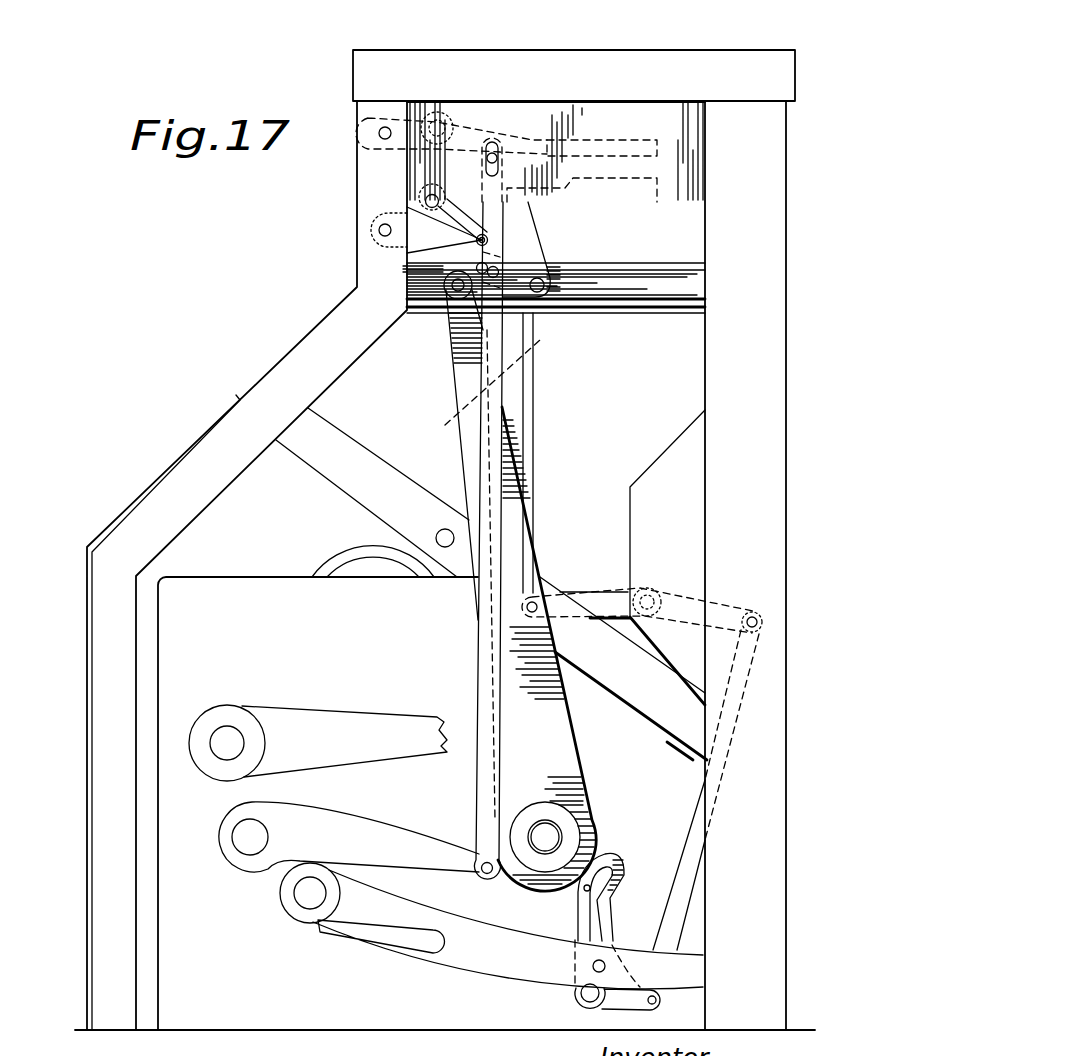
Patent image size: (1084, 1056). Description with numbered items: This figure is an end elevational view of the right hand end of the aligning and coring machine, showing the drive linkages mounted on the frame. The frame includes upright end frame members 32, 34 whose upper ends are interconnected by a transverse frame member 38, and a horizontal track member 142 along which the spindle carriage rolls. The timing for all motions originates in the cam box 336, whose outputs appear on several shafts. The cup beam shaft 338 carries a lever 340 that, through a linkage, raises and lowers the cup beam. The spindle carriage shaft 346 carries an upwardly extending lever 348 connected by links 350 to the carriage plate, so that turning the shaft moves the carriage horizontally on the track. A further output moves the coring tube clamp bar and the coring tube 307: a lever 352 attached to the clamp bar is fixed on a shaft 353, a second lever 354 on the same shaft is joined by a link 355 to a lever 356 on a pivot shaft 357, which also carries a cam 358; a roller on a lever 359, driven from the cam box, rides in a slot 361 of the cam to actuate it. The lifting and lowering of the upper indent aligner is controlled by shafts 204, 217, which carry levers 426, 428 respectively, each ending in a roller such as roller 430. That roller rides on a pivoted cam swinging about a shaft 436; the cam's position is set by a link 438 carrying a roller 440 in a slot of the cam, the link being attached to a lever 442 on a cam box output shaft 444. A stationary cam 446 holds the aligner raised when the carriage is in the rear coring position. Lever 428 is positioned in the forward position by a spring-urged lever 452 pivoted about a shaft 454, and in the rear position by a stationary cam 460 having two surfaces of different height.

The end frame member 32 is at (762, 515).
The end frame member 34 is at (106, 832).
The transverse frame member 38 is at (687, 77).
The track member 142 is at (690, 267).
The shaft 204 is at (482, 240).
The shaft 217 is at (440, 116).
The tube 307 is at (531, 408).
The cam box 336 is at (303, 623).
The cup beam shaft 338 is at (229, 742).
The lever 340 is at (311, 727).
The spindle carriage shaft 346 is at (550, 838).
The lever 348 is at (510, 746).
The link 350 is at (518, 292).
The lever 352 is at (596, 602).
The shaft 353 is at (652, 598).
The lever 354 is at (730, 612).
The link 355 is at (724, 762).
The lever 356 is at (612, 1006).
The pivot shaft 357 is at (577, 991).
The cam 358 is at (578, 922).
The lever 359 is at (461, 955).
The slot 361 is at (585, 889).
The lever 426 is at (482, 240).
The lever 428 is at (476, 160).
The roller 430 is at (437, 274).
The shaft 436 is at (378, 233).
The link 438 is at (432, 264).
The roller 440 is at (513, 270).
The lever 442 is at (393, 843).
The shaft 444 is at (253, 842).
The stationary cam 446 is at (665, 187).
The lever 452 is at (530, 136).
The shaft 454 is at (378, 131).
The stationary cam 460 is at (600, 137).